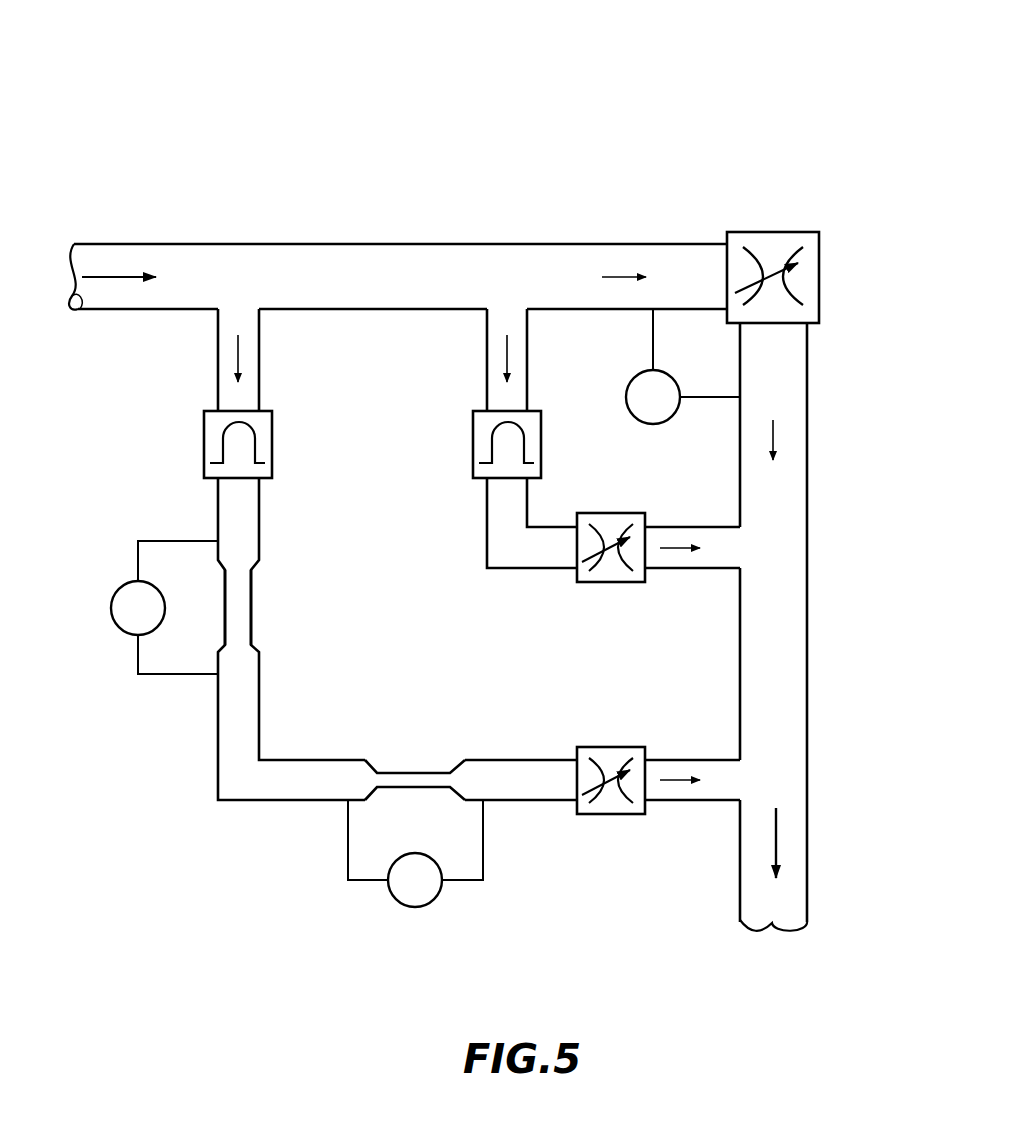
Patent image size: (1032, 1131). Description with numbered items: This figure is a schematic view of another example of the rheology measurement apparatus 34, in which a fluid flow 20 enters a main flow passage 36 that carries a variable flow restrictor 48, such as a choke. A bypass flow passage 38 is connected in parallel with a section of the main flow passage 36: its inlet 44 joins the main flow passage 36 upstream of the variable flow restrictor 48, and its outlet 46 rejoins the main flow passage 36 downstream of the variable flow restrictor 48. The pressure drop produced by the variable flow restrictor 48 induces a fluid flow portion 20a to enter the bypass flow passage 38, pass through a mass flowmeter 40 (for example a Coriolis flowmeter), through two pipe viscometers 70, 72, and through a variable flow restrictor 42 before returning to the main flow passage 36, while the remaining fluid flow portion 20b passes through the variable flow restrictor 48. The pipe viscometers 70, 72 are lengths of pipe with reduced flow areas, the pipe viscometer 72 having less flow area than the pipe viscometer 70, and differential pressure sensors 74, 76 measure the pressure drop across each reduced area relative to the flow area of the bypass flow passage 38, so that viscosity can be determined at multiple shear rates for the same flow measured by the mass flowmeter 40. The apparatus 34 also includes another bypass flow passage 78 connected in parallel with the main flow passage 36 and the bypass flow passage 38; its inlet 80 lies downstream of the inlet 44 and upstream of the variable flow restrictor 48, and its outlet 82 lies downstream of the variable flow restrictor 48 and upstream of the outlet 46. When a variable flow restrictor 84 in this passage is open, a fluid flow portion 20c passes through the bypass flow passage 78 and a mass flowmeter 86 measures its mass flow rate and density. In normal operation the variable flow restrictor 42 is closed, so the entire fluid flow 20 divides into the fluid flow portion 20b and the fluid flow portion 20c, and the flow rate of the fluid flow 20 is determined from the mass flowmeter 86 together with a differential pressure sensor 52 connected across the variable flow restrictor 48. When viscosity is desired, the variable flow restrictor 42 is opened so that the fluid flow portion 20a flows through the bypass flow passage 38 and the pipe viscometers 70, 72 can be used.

The rheology measurement apparatus 34 is at (828, 98).
The fluid flow 20 is at (115, 274).
The main flow passage 36 is at (212, 243).
The fluid flow portion 20b is at (625, 276).
The variable flow restrictor 48 is at (820, 285).
The inlet 44 is at (238, 320).
The fluid flow portion 20a is at (237, 355).
The mass flowmeter 40 is at (204, 425).
The inlet 80 is at (508, 320).
The fluid flow portion 20c is at (507, 355).
The mass flowmeter 86 is at (473, 425).
The differential pressure sensor 52 is at (660, 425).
The bypass flow passage 78 is at (487, 530).
The variable flow restrictor 84 is at (618, 583).
The outlet 82 is at (734, 547).
The bypass flow passage 38 is at (218, 703).
The pipe viscometer 70 is at (252, 597).
The differential pressure sensor 74 is at (111, 608).
The pipe viscometer 72 is at (396, 773).
The differential pressure sensor 76 is at (415, 907).
The variable flow restrictor 42 is at (617, 814).
The outlet 46 is at (728, 782).